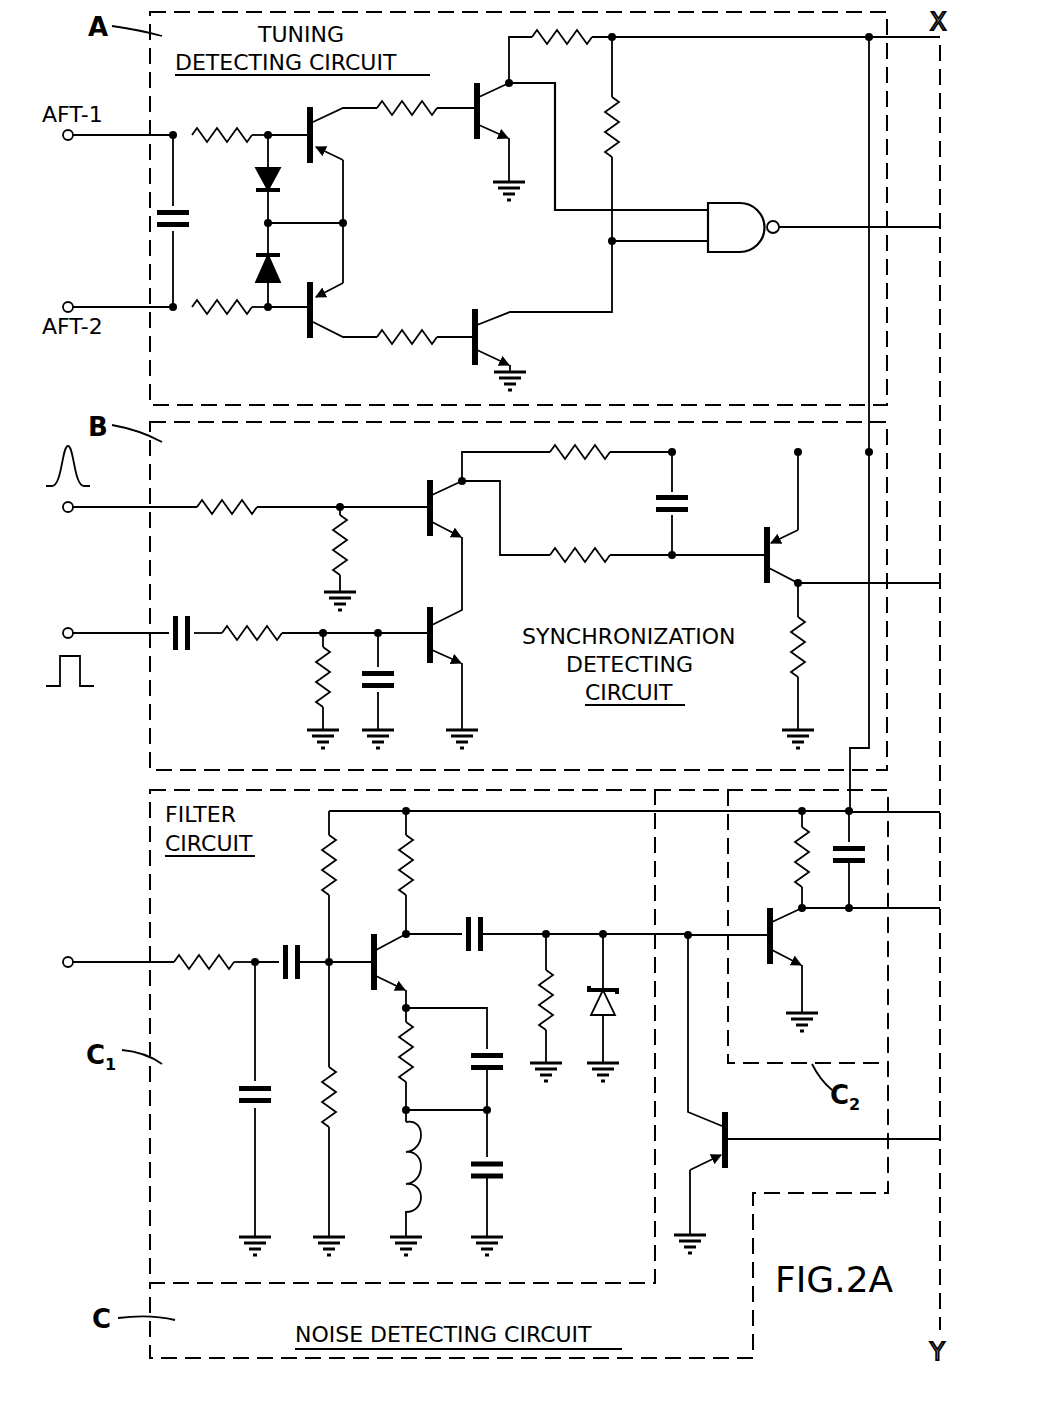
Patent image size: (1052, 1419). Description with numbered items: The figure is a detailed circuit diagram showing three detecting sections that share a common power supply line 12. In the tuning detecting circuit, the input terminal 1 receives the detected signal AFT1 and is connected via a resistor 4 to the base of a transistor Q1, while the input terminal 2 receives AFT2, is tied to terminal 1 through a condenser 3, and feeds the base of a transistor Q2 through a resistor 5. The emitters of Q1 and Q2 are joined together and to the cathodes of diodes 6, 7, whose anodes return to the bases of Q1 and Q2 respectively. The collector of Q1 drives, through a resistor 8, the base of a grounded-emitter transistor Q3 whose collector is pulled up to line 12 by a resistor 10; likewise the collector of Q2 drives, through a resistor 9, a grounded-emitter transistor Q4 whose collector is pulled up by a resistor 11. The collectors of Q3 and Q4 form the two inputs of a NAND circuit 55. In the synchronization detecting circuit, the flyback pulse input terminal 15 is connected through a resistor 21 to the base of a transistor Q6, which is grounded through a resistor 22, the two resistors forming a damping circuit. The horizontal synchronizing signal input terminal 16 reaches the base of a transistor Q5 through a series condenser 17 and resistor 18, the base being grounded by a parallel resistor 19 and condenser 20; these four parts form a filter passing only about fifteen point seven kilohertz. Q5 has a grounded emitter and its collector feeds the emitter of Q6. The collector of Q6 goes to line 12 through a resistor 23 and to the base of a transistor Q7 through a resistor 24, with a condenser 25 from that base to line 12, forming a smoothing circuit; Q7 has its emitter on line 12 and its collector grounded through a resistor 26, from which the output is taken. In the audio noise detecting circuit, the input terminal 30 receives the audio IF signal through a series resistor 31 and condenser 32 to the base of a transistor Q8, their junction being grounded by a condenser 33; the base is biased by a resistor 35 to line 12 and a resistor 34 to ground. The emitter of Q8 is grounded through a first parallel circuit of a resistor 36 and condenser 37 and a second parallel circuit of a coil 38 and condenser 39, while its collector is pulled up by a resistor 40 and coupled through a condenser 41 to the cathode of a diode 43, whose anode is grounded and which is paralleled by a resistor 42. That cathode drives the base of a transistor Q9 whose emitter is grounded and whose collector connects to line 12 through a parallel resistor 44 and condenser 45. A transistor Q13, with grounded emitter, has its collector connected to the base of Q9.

The input terminal 1 is at (65, 140).
The input terminal 2 is at (68, 302).
The condenser 3 is at (170, 214).
The resistor 4 is at (236, 128).
The resistor 5 is at (232, 316).
The diode 6 is at (256, 171).
The diode 7 is at (255, 266).
The resistor 8 is at (418, 118).
The resistor 9 is at (408, 350).
The resistor 10 is at (580, 45).
The resistor 11 is at (618, 119).
The power supply line 12 is at (790, 42).
The flyback pulse input terminal 15 is at (70, 513).
The horizontal synchronizing signal input terminal 16 is at (70, 628).
The condenser 17 is at (186, 615).
The resistor 18 is at (250, 648).
The resistor 19 is at (318, 686).
The condenser 20 is at (388, 692).
The resistor 21 is at (215, 503).
The resistor 22 is at (335, 548).
The resistor 23 is at (592, 462).
The resistor 24 is at (592, 565).
The condenser 25 is at (690, 496).
The resistor 26 is at (803, 660).
The input terminal 30 is at (70, 957).
The resistor 31 is at (222, 955).
The condenser 32 is at (292, 985).
The condenser 33 is at (250, 1088).
The resistor 34 is at (325, 1100).
The resistor 35 is at (325, 878).
The resistor 36 is at (404, 1063).
The condenser 37 is at (495, 1072).
The coil 38 is at (404, 1164).
The condenser 39 is at (500, 1174).
The resistor 40 is at (412, 862).
The condenser 41 is at (482, 920).
The resistor 42 is at (542, 983).
The diode 43 is at (612, 987).
The resistor 44 is at (797, 870).
The condenser 45 is at (862, 856).
The NAND circuit 55 is at (722, 203).
The transistor Q1 is at (308, 123).
The transistor Q2 is at (308, 325).
The transistor Q3 is at (476, 126).
The transistor Q4 is at (472, 326).
The transistor Q5 is at (428, 622).
The transistor Q6 is at (428, 500).
The transistor Q7 is at (764, 568).
The transistor Q8 is at (380, 968).
The transistor Q9 is at (770, 968).
The transistor Q13 is at (728, 1120).